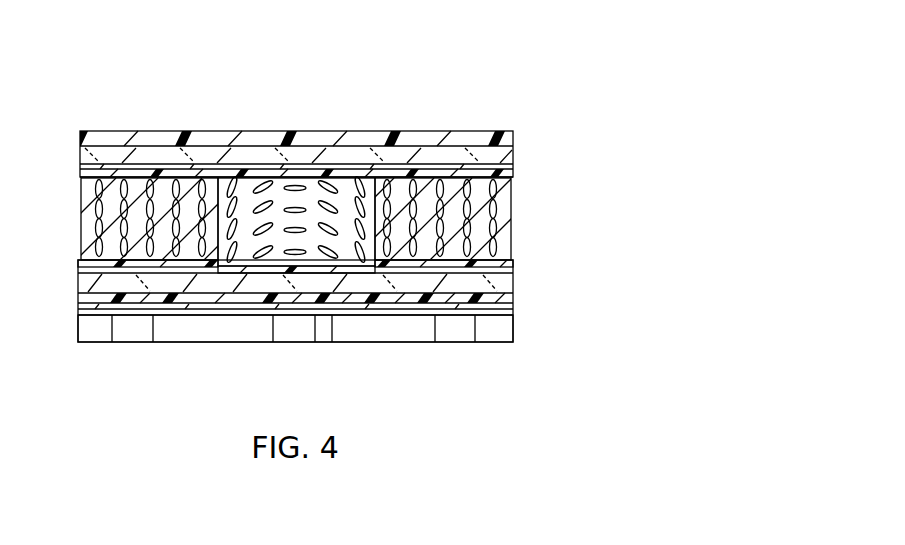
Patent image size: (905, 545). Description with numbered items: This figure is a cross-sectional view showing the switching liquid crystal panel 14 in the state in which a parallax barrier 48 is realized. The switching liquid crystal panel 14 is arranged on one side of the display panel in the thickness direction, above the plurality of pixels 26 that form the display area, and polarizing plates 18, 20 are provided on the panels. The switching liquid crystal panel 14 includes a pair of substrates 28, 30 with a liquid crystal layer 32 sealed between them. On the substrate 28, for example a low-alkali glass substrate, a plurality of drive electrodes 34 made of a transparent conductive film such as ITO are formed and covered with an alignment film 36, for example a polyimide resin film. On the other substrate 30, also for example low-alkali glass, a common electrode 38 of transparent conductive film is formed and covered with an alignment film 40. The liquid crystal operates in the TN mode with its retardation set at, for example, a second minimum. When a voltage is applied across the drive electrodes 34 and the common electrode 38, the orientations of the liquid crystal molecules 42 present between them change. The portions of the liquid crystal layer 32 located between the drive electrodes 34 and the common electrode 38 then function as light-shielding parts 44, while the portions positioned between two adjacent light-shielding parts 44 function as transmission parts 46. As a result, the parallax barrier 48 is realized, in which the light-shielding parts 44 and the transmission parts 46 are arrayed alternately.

The switching liquid crystal panel 14 is at (513, 150).
The polarizing plate 18 is at (415, 304).
The polarizing plate 20 is at (447, 140).
The pixels 26 is at (107, 332).
The substrate 28 is at (452, 292).
The substrate 30 is at (478, 162).
The liquid crystal layer 32 is at (283, 156).
The drive electrodes 34 is at (84, 286).
The alignment film 36 is at (512, 262).
The common electrode 38 is at (166, 168).
The alignment film 40 is at (133, 165).
The liquid crystal molecules 42 is at (100, 250).
The light-shielding parts 44 is at (92, 203).
The transmission parts 46 is at (350, 190).
The parallax barrier 48 is at (511, 222).